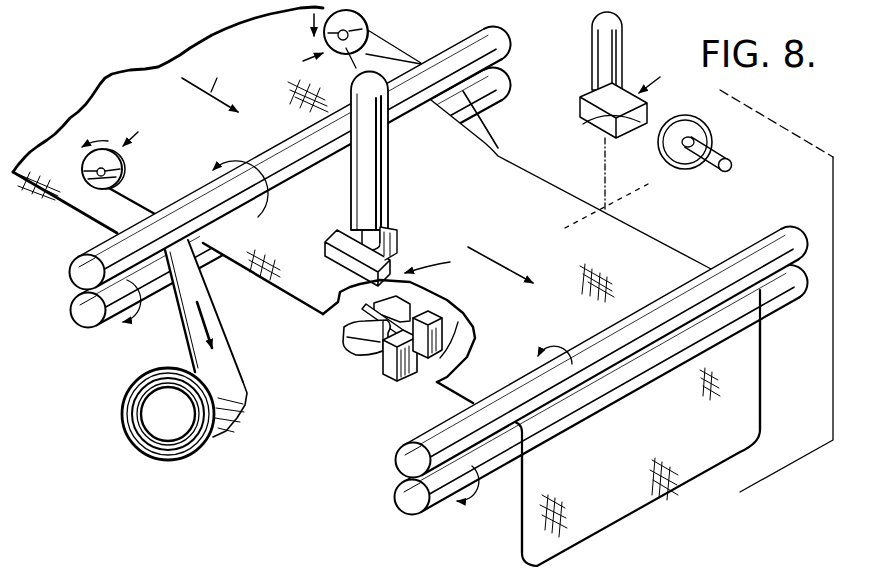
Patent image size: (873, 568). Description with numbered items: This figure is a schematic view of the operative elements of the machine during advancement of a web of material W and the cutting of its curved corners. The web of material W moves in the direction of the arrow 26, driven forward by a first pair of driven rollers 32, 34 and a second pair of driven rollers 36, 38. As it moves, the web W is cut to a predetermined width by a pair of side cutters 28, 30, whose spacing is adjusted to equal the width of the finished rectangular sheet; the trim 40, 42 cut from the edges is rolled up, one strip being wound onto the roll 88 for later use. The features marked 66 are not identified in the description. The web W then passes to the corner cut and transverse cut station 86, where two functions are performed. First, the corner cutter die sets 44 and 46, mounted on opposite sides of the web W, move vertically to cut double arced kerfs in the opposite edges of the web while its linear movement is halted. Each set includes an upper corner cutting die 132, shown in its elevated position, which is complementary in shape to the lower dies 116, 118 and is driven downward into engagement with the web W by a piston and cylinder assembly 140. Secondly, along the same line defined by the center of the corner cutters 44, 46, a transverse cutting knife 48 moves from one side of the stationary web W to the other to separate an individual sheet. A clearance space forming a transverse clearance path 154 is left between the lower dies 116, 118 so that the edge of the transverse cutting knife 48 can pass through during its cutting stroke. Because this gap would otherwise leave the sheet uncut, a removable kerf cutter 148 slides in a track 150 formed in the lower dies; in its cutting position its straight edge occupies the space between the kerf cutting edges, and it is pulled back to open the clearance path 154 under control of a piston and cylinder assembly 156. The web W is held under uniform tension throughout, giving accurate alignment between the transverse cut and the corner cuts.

The web of material W is at (147, 87).
The arrow 26 is at (210, 85).
The side cutter 28 is at (124, 160).
The side cutter 30 is at (364, 18).
The driven roller 32 is at (80, 270).
The driven roller 34 is at (77, 308).
The driven roller 36 is at (404, 459).
The driven roller 38 is at (403, 503).
The trim 40 is at (187, 322).
The trim 42 is at (482, 128).
The corner cutter die set 44 is at (418, 327).
The corner cutter die set 46 is at (655, 78).
The transverse cutting knife 48 is at (712, 138).
The roller movement arrow 66 is at (223, 99).
The corner cut and transverse cut station 86 is at (322, 343).
The roll 88 is at (127, 433).
The lower die 116 is at (406, 374).
The lower die 118 is at (343, 350).
The upper corner cutting die 132 is at (340, 232).
The piston and cylinder assembly 140 is at (384, 166).
The removable kerf cutter 148 is at (350, 287).
The track 150 is at (418, 362).
The transverse clearance path 154 is at (413, 313).
The piston and cylinder assembly 156 is at (480, 323).